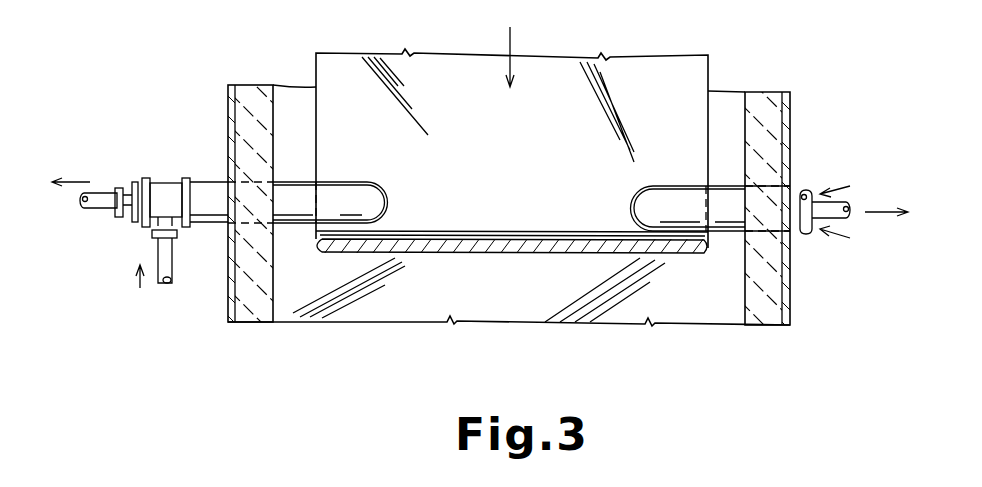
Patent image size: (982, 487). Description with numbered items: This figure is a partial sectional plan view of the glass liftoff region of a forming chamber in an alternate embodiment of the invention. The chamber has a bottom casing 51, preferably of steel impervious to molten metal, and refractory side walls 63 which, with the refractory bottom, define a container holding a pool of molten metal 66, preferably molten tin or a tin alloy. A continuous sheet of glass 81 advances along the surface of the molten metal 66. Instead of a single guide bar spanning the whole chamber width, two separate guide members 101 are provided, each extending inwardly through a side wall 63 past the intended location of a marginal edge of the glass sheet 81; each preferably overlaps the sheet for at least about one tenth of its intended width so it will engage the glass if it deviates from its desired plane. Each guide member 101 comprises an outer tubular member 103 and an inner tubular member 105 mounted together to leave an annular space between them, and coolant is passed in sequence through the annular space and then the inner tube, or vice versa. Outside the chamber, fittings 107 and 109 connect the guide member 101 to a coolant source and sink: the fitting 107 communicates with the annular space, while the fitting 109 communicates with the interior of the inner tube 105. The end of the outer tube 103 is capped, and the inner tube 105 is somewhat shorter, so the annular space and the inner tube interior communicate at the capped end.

The bottom casing 51 is at (789, 107).
The refractory side walls 63 is at (761, 102).
The pool of molten metal 66 is at (498, 293).
The continuous sheet of glass 81 is at (507, 157).
The guide member 101 is at (363, 175).
The outer tubular member 103 is at (800, 192).
The inner tubular member 105 is at (853, 206).
The fitting 107 is at (174, 235).
The fitting 109 is at (98, 202).